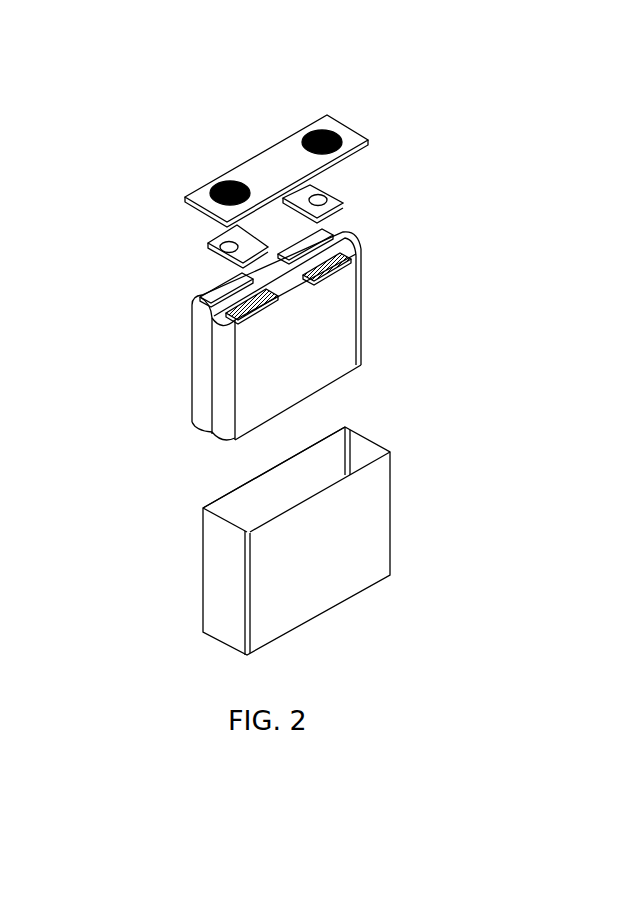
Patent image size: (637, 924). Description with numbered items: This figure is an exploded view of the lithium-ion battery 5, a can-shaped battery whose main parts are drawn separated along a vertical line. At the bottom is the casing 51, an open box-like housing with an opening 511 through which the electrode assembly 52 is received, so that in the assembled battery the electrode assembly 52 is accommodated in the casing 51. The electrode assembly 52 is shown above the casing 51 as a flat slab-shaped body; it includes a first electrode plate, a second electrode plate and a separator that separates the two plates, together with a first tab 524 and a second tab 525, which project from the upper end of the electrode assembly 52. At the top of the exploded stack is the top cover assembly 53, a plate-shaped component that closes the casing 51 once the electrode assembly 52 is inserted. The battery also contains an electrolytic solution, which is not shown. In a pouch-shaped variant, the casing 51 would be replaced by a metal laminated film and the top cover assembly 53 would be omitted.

The lithium-ion battery 5 is at (194, 46).
The casing 51 is at (251, 541).
The opening of housing 511 is at (289, 466).
The electrode assembly 52 is at (185, 415).
The first tab 524 is at (222, 287).
The second tab 525 is at (335, 236).
The top cover assembly 53 is at (199, 173).